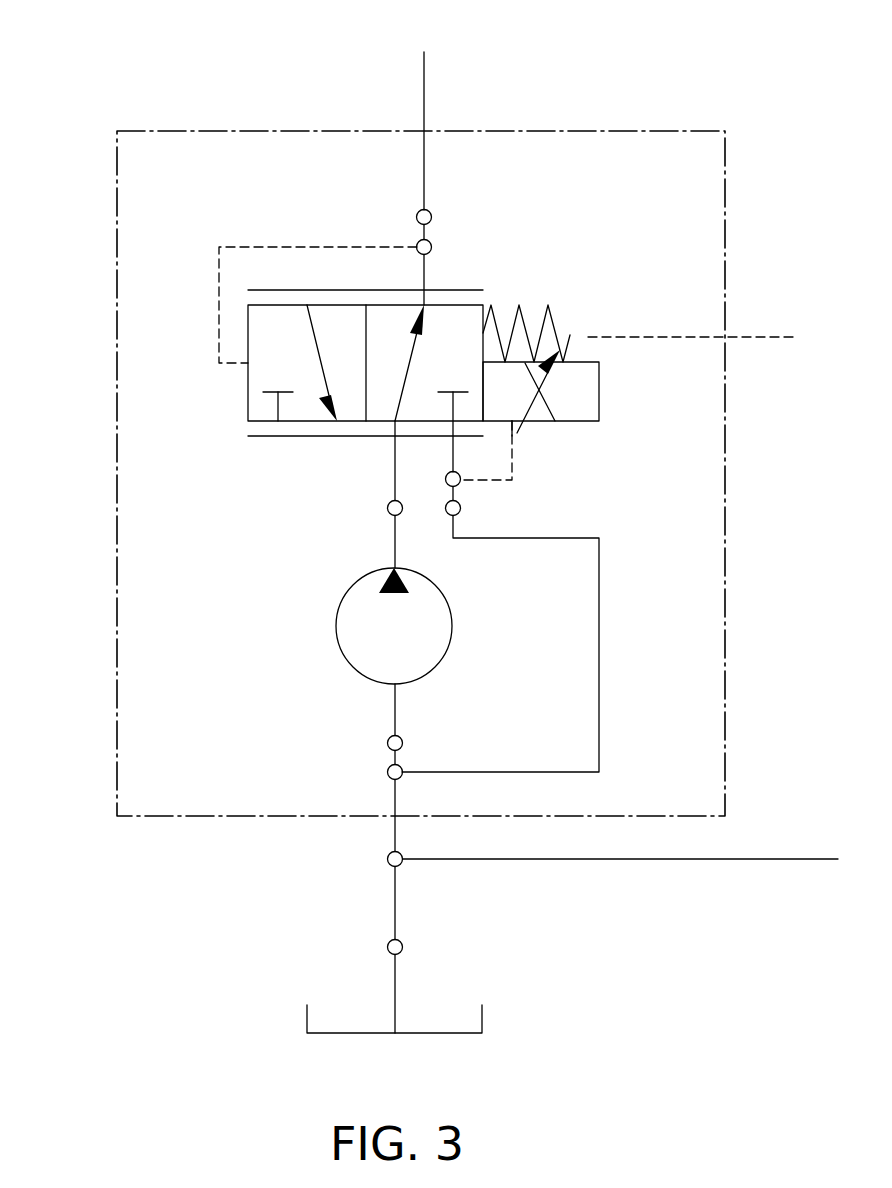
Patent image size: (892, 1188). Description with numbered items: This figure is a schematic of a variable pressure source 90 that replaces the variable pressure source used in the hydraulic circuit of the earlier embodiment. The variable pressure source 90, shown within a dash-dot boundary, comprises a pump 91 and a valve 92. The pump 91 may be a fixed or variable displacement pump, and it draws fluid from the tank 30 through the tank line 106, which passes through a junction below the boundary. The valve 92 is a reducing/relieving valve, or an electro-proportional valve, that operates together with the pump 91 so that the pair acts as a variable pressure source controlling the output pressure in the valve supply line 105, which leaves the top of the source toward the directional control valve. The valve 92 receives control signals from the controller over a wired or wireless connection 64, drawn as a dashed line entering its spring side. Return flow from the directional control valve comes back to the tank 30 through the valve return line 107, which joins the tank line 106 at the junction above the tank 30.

The tank 30 is at (338, 1035).
The wired or wireless connection 64 is at (767, 337).
The variable pressure source 90 is at (117, 382).
The pump 91 is at (337, 635).
The valve 92 is at (475, 297).
The valve supply line 105 is at (423, 87).
The tank line 106 is at (393, 833).
The valve return line 107 is at (620, 860).